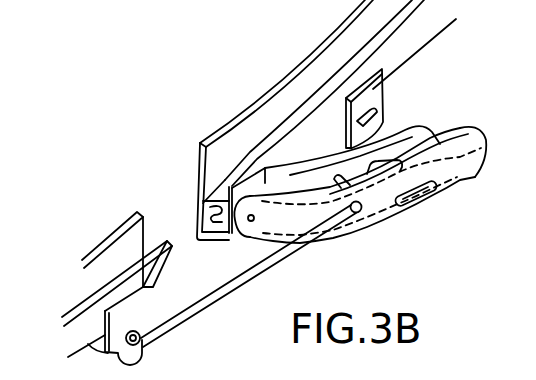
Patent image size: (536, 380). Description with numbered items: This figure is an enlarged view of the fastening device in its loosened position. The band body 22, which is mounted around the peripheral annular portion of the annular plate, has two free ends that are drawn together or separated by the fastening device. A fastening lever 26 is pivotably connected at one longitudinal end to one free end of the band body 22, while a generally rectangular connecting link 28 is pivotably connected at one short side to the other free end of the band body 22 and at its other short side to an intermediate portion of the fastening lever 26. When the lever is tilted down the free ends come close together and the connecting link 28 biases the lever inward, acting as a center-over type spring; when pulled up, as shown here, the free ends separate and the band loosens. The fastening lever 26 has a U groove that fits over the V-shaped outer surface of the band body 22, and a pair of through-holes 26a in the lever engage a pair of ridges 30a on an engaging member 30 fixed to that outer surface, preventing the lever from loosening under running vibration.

The band body 22 is at (268, 95).
The fastening lever 26 is at (443, 172).
The through-holes 26a is at (383, 174).
The connecting link 28 is at (203, 307).
The engaging member 30 is at (375, 88).
The ridges 30a is at (367, 110).